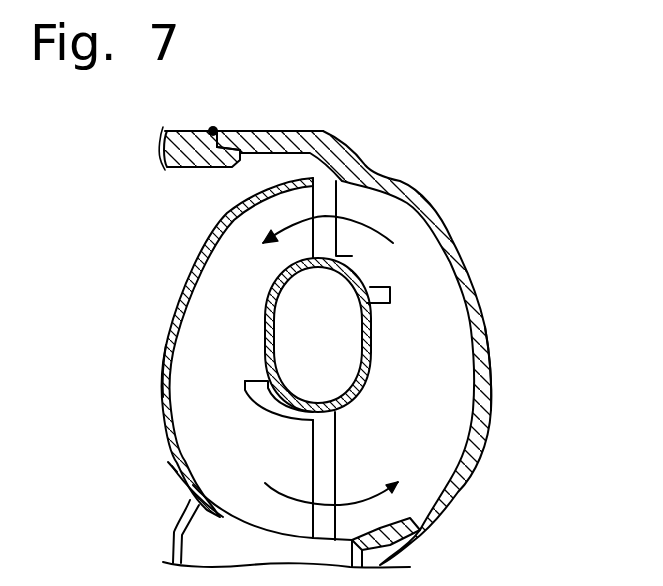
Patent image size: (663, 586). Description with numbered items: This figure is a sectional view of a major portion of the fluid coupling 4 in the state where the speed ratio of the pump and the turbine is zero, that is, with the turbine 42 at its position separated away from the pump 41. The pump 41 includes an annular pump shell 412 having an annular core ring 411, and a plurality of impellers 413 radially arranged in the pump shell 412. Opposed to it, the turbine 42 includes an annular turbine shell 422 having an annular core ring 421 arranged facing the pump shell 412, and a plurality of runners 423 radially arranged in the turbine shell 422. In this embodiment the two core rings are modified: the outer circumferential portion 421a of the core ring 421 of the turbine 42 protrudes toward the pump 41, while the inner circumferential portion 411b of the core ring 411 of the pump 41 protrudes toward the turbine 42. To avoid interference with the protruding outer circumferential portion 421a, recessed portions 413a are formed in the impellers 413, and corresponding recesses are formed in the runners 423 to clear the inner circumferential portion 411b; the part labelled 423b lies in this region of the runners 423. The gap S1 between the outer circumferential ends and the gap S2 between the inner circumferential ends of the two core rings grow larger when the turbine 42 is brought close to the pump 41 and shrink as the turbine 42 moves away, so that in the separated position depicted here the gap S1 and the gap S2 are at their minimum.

The fluid coupling 4 is at (408, 143).
The pump 41 is at (430, 197).
The core ring 411 is at (373, 360).
The inner circumferential portion 411b is at (267, 403).
The pump shell 412 is at (490, 363).
The impellers 413 is at (433, 462).
The recessed portions 413a is at (380, 237).
The turbine 42 is at (190, 256).
The core ring 421 is at (265, 313).
The outer circumferential portion 421a is at (397, 258).
The turbine shell 422 is at (165, 347).
The runners 423 is at (222, 460).
The plate portion of leg 423b is at (265, 420).
The gap S1 is at (397, 288).
The gap S2 is at (245, 382).